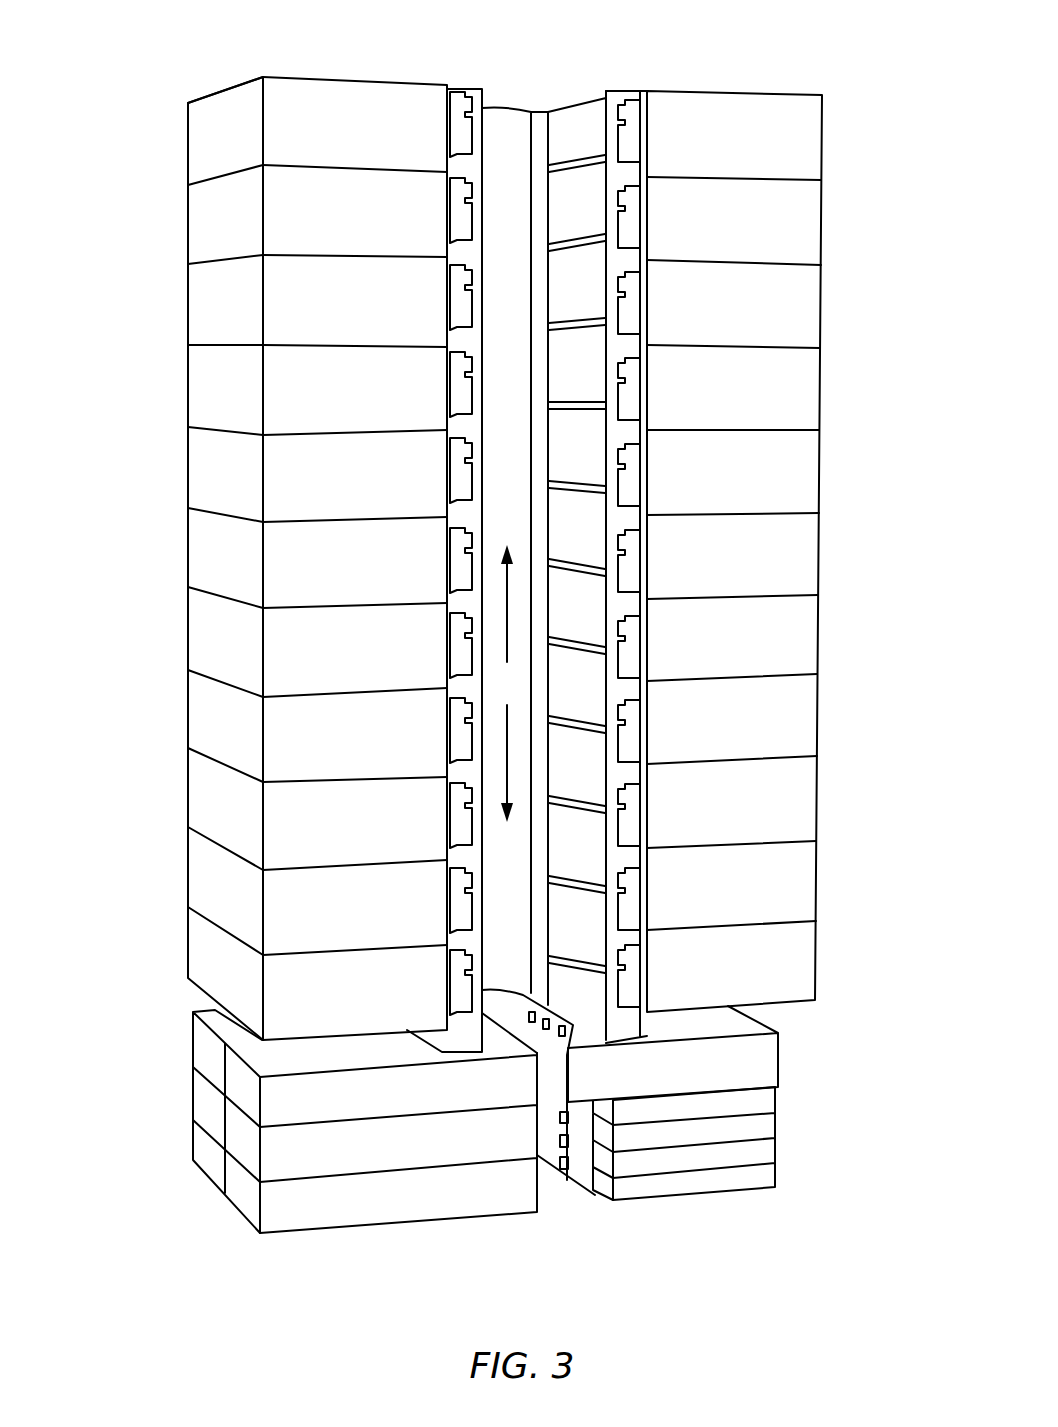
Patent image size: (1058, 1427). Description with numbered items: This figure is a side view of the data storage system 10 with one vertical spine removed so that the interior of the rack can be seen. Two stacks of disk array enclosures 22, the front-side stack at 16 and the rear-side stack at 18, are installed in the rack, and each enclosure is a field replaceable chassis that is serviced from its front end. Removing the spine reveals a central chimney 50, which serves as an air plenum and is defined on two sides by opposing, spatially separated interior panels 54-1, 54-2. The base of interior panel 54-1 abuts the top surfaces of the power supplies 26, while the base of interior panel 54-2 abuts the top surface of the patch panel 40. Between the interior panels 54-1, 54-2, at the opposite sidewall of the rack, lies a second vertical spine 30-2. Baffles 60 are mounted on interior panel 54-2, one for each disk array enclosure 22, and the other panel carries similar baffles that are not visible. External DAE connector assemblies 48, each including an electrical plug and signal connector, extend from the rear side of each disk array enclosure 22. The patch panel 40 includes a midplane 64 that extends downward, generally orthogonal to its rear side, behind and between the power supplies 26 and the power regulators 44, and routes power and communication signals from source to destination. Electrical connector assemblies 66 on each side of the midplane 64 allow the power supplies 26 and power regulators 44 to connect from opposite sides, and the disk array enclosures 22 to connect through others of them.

The data storage system 10 is at (78, 84).
The first tower 16 is at (150, 740).
The second tower 18 is at (838, 650).
The disk array enclosures 22 is at (212, 620).
The power supplies 26 is at (248, 1200).
The second vertical spine 30-2 is at (507, 158).
The patch panel 40 is at (773, 1060).
The power regulators 44 is at (757, 1178).
The DAE connector assemblies 48 is at (460, 125).
The central chimney 50 is at (494, 692).
The interior panel 54-1 is at (468, 1025).
The interior panel 54-2 is at (618, 1027).
The baffles 60 is at (565, 160).
The midplane 64 is at (578, 1178).
The electrical connector assemblies 66 is at (560, 1163).